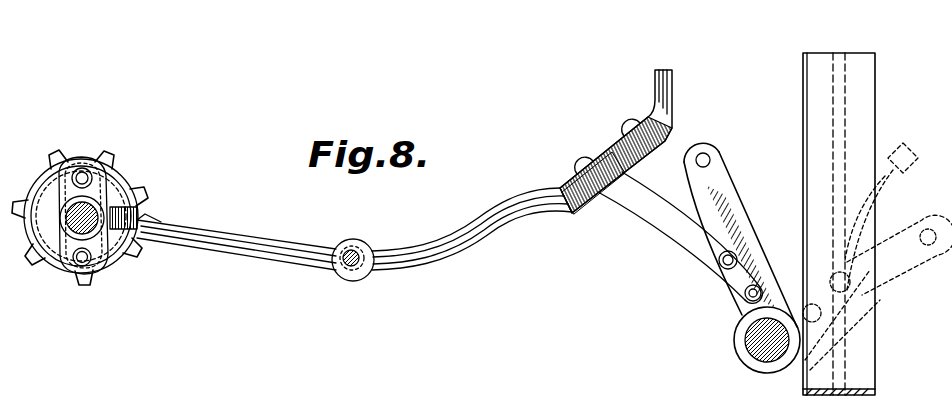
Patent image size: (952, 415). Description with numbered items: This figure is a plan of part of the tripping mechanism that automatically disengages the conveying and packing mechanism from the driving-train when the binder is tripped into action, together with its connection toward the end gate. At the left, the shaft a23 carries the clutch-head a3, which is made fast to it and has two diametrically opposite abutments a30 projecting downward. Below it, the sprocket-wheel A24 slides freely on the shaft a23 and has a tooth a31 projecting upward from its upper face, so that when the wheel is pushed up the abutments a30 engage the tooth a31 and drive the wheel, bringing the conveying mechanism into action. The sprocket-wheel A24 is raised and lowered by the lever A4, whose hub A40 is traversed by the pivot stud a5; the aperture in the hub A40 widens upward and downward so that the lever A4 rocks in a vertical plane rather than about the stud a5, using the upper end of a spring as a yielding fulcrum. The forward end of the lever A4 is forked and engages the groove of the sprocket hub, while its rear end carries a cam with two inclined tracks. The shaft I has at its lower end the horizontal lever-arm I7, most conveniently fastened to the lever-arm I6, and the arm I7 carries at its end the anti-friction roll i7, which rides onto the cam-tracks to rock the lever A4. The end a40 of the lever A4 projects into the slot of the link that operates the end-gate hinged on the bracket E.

The shaft a23 is at (68, 223).
The sprocket-wheel A24 is at (118, 256).
The clutch-head a3 is at (92, 203).
The abutments a30 is at (88, 262).
The tooth a31 is at (141, 218).
The lever A4 is at (283, 247).
The hub A40 is at (351, 256).
The pivot pin a5 is at (352, 264).
The end of the lever a40 is at (655, 84).
The anti-friction roll i7 is at (618, 176).
The lever-arm I7 is at (665, 230).
The lever arm I6 is at (723, 190).
The shaft I is at (765, 350).
The bracket E is at (825, 98).